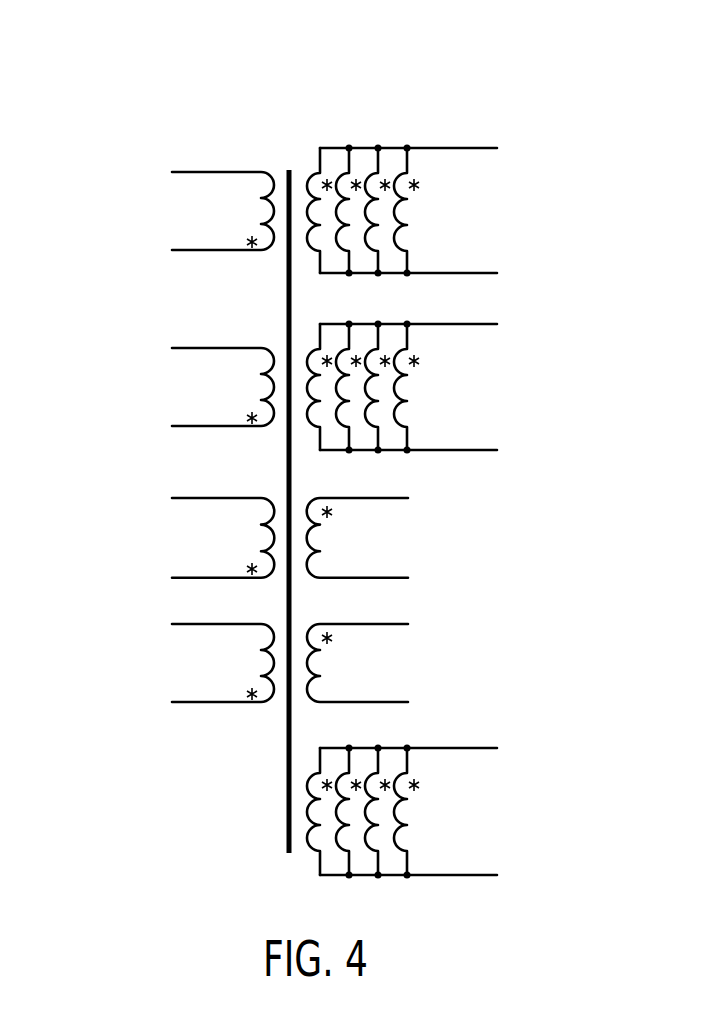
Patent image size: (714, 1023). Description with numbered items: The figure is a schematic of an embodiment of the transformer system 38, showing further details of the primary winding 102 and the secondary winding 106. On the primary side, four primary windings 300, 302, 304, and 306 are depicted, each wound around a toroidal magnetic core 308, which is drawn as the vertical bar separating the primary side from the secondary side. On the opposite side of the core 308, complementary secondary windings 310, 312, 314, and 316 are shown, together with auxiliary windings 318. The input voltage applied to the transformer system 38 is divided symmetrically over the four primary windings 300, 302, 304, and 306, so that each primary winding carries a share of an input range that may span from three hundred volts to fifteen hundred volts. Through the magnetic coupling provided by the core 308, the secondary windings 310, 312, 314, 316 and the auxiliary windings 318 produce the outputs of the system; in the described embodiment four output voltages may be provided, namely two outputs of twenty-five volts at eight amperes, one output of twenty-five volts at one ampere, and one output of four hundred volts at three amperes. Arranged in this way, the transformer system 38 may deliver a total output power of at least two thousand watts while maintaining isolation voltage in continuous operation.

The transformer system 38 is at (301, 60).
The primary winding 102 is at (231, 131).
The secondary winding 106 is at (375, 104).
The primary winding 300 is at (139, 194).
The primary winding 302 is at (139, 371).
The primary winding 304 is at (139, 522).
The primary winding 306 is at (139, 647).
The toroidal magnetic core 308 is at (287, 790).
The secondary winding 310 is at (506, 204).
The secondary winding 312 is at (506, 381).
The secondary winding 314 is at (424, 529).
The secondary winding 316 is at (424, 656).
The auxiliary windings 318 is at (506, 804).